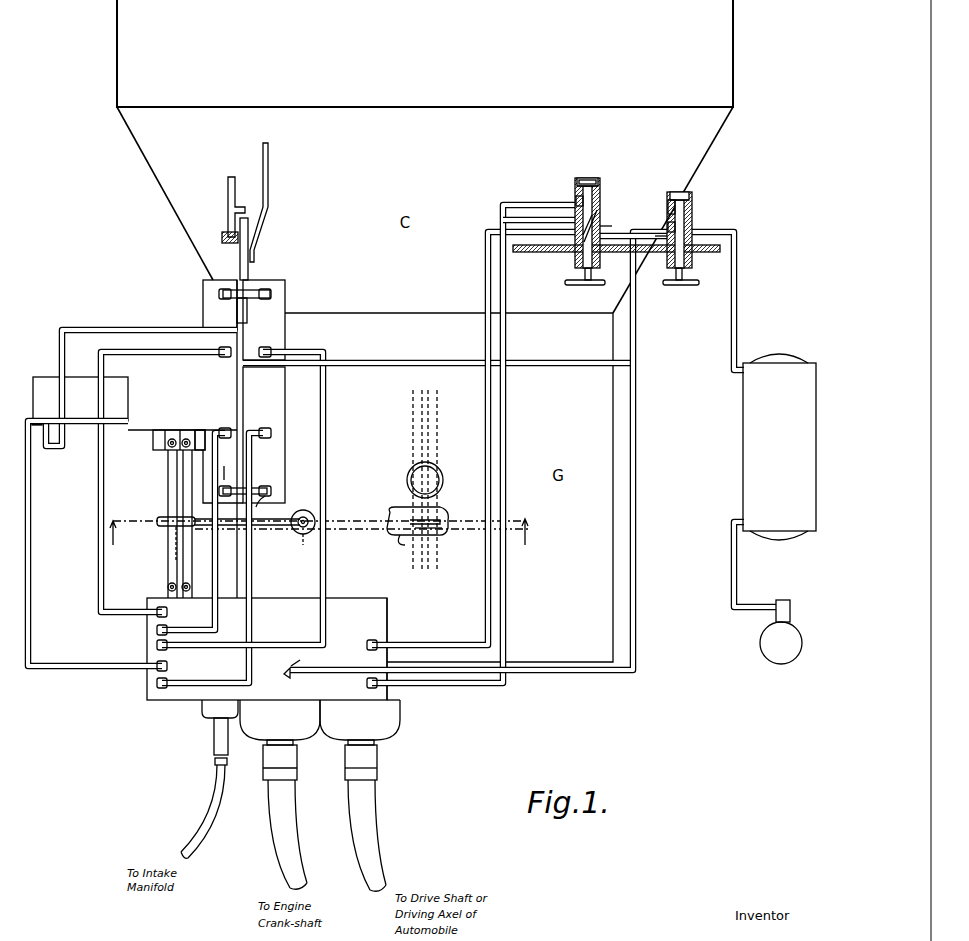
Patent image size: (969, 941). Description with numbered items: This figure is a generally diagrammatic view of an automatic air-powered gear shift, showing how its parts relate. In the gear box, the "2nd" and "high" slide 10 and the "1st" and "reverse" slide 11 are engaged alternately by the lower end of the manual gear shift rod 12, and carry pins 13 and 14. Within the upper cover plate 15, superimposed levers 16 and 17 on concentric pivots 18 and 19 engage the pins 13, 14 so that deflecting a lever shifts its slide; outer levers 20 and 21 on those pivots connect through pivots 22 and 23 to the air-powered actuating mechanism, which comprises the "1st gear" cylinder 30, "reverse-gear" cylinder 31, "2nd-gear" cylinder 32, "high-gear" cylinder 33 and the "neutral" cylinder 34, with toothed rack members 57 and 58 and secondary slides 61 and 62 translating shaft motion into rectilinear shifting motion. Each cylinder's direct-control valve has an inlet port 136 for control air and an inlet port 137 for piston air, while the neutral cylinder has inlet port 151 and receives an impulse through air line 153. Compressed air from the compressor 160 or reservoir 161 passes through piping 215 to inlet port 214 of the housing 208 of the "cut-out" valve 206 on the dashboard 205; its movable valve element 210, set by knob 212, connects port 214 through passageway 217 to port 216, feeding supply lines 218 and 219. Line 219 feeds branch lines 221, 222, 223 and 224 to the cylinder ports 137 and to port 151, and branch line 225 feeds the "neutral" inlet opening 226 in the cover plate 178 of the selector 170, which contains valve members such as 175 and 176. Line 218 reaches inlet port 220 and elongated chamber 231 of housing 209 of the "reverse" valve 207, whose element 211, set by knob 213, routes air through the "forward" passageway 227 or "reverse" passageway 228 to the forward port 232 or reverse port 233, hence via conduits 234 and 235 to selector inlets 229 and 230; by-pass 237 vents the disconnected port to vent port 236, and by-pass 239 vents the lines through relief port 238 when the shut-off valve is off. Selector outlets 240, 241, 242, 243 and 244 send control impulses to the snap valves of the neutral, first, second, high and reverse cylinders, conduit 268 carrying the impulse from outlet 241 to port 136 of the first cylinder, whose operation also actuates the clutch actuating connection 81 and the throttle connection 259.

The "2nd" and "high" slide 10 is at (405, 512).
The "1st" and "reverse" slide 11 is at (438, 480).
The manual gear shift rod 12 is at (437, 472).
The pin 13 is at (393, 547).
The pin 14 is at (445, 530).
The upper cover plate 15 is at (618, 537).
The lever 16 is at (390, 518).
The lever 17 is at (445, 518).
The concentric pivot 18 is at (305, 547).
The concentric pivot 19 is at (303, 510).
The lever 20 is at (192, 530).
The lever 21 is at (266, 526).
The pivot 22 is at (170, 534).
The pivot 23 is at (170, 517).
The "1st gear" cylinder 30 is at (285, 320).
The "reverse-gear" cylinder 31 is at (285, 451).
The "2nd-gear" cylinder 32 is at (223, 465).
The "high-gear" cylinder 33 is at (203, 311).
The "neutral" cylinder 34 is at (80, 377).
The toothed rack member 57 is at (153, 441).
The toothed rack member 58 is at (200, 430).
The secondary slide 61 is at (172, 438).
The secondary slide 62 is at (186, 438).
The clutch actuating connection 81 is at (240, 256).
The stationary inlet port 136 is at (271, 350).
The stationary inlet port 137 is at (225, 289).
The stationary inlet port 151 is at (46, 446).
The air line 153 is at (33, 420).
The compressor 160 is at (784, 627).
The reservoir 161 is at (758, 440).
The selector means 170 is at (355, 598).
The valve member 175 is at (190, 590).
The valve member 176 is at (166, 589).
The cover plate 178 is at (387, 607).
The dashboard or instrument panel 205 is at (530, 252).
The "cut-out" valve 206 is at (676, 270).
The "reverse" valve 207 is at (585, 268).
The valve housing 208 is at (692, 200).
The valve housing 209 is at (575, 185).
The movable valve element 210 is at (680, 192).
The movable valve element 211 is at (583, 178).
The handle or knob 212 is at (684, 285).
The handle or knob 213 is at (585, 290).
The inlet port 214 is at (700, 229).
The conduit or piping 215 is at (738, 283).
The port 216 is at (660, 234).
The movable port or passageway 217 is at (675, 239).
The air supply line 218 is at (612, 224).
The air supply line 219 is at (637, 331).
The inlet port 220 is at (606, 233).
The branch line 221 is at (395, 360).
The branch line 222 is at (250, 290).
The branch line 223 is at (268, 506).
The branch line 224 is at (110, 327).
The branch line 225 is at (588, 673).
The "neutral" inlet opening 226 is at (284, 665).
The "forward" passageway 227 is at (633, 243).
The "reverse" passageway 228 is at (592, 180).
The inlet opening 229 is at (465, 441).
The inlet opening 230 is at (367, 683).
The elongated chamber 231 is at (598, 218).
The "forward" port 232 is at (560, 229).
The "reverse" port 233 is at (576, 199).
The conduit 234 is at (486, 561).
The conduit 235 is at (506, 561).
The vent port 236 is at (560, 221).
The by-pass 237 is at (572, 209).
The vent or relief port 238 is at (668, 222).
The by-pass 239 is at (670, 200).
The outlet opening 240 is at (167, 665).
The outlet opening 241 is at (157, 645).
The outlet opening 242 is at (157, 630).
The outlet opening 243 is at (167, 612).
The outlet opening 244 is at (157, 683).
The throttle connection 259 is at (268, 200).
The conduit 268 is at (104, 480).